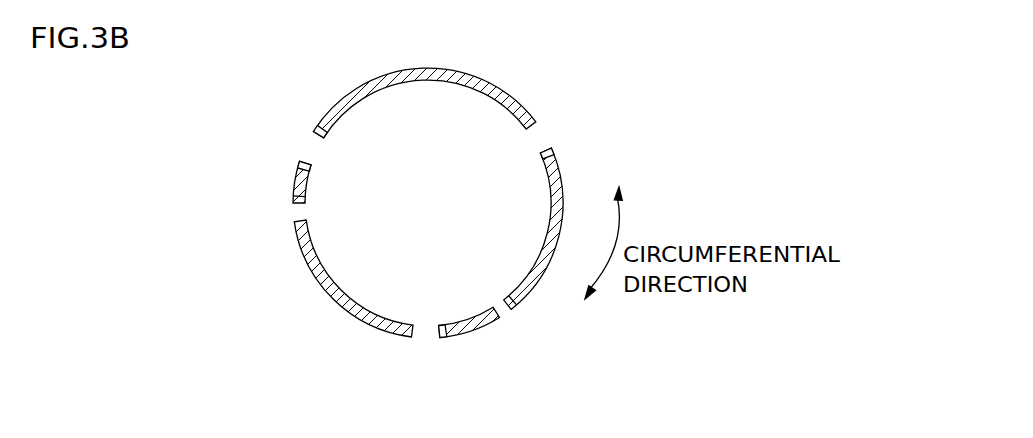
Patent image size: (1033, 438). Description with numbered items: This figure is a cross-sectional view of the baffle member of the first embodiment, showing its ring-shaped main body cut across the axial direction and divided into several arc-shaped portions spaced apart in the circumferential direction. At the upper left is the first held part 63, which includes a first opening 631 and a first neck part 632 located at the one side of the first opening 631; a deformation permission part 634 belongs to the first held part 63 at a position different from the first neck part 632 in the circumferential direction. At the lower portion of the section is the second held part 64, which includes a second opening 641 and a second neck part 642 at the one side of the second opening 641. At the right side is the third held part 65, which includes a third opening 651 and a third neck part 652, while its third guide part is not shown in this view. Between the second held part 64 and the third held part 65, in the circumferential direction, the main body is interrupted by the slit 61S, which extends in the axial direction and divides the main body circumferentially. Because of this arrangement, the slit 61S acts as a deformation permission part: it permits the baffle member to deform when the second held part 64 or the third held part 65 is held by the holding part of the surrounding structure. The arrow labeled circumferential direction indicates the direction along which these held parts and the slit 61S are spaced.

The slit 61S is at (508, 311).
The first held part 63 is at (237, 140).
The first opening 631 is at (312, 131).
The first neck part 632 is at (298, 158).
The deformation permission part 634 is at (296, 203).
The second held part 64 is at (396, 323).
The second opening 641 is at (410, 338).
The second neck part 642 is at (442, 331).
The third held part 65 is at (507, 177).
The third opening 651 is at (552, 147).
The third neck part 652 is at (536, 127).